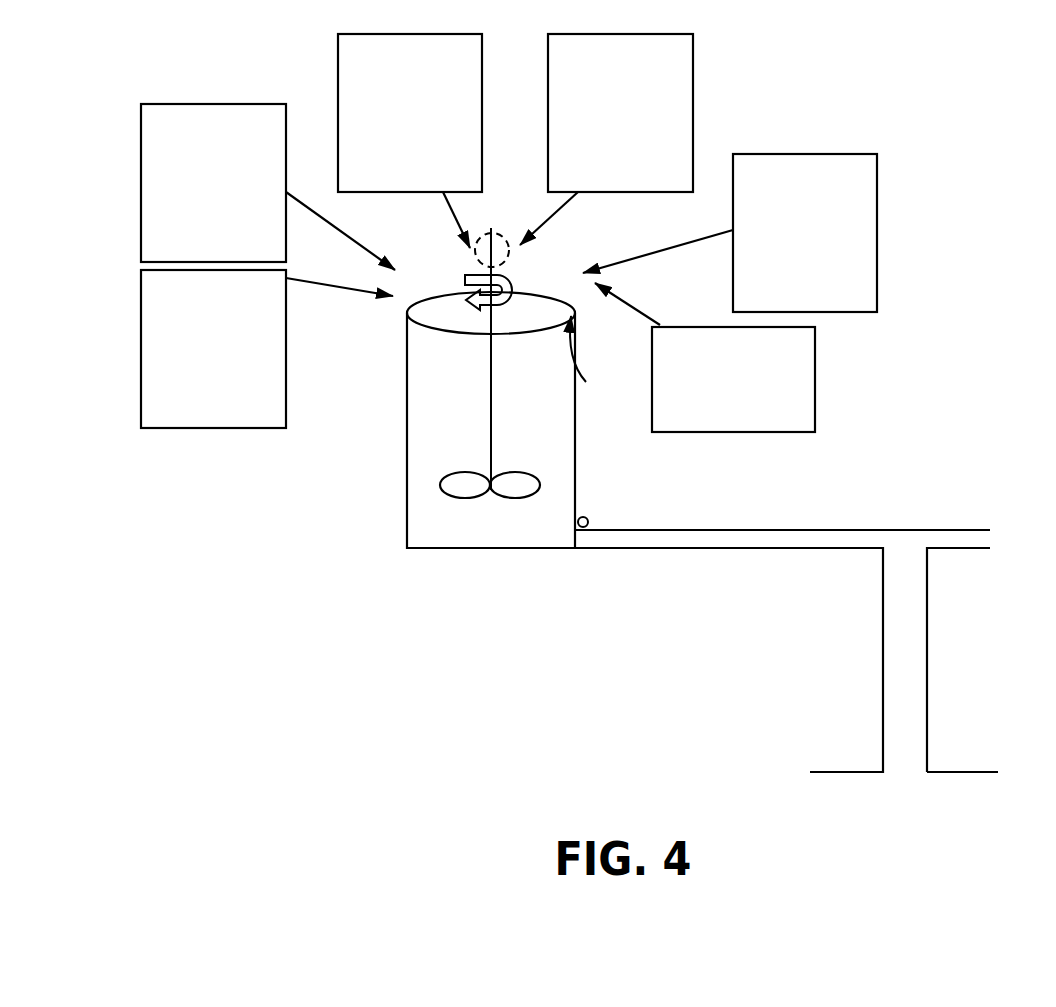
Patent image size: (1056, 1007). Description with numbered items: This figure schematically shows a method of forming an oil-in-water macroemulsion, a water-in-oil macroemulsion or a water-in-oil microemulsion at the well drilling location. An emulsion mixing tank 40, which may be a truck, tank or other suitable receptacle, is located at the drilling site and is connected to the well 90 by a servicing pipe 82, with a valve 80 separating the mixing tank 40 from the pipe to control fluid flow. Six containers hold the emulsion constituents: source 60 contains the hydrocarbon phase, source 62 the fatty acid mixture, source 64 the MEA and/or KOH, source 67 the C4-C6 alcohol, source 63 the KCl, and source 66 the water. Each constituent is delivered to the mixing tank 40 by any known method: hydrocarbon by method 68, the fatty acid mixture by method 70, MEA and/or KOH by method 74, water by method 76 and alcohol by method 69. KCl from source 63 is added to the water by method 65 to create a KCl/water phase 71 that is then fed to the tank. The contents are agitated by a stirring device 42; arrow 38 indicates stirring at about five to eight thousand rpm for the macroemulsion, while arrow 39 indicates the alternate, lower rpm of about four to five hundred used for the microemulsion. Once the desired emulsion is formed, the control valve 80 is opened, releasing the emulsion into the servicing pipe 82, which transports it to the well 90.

The stirring arrow 38 is at (510, 285).
The alternate rpm arrow 39 is at (505, 242).
The emulsion mixing tank 40 is at (407, 523).
The stirring device 42 is at (467, 498).
The hydrocarbon phase source 60 is at (213, 183).
The fatty acid mixture source 62 is at (410, 113).
The KCl source 63 is at (733, 379).
The MEA and/or KOH source 64 is at (620, 113).
The KCl addition method 65 is at (632, 310).
The water source 66 is at (805, 233).
The C4-C6 alcohol source 67 is at (213, 349).
The hydrocarbon addition method 68 is at (350, 233).
The alcohol addition method 69 is at (337, 288).
The fatty acid addition method 70 is at (452, 215).
The KCl/water phase 71 is at (594, 359).
The MEA/KOH addition method 74 is at (567, 212).
The water addition method 76 is at (640, 258).
The valve 80 is at (589, 520).
The well servicing pipe 82 is at (770, 530).
The well 90 is at (927, 655).